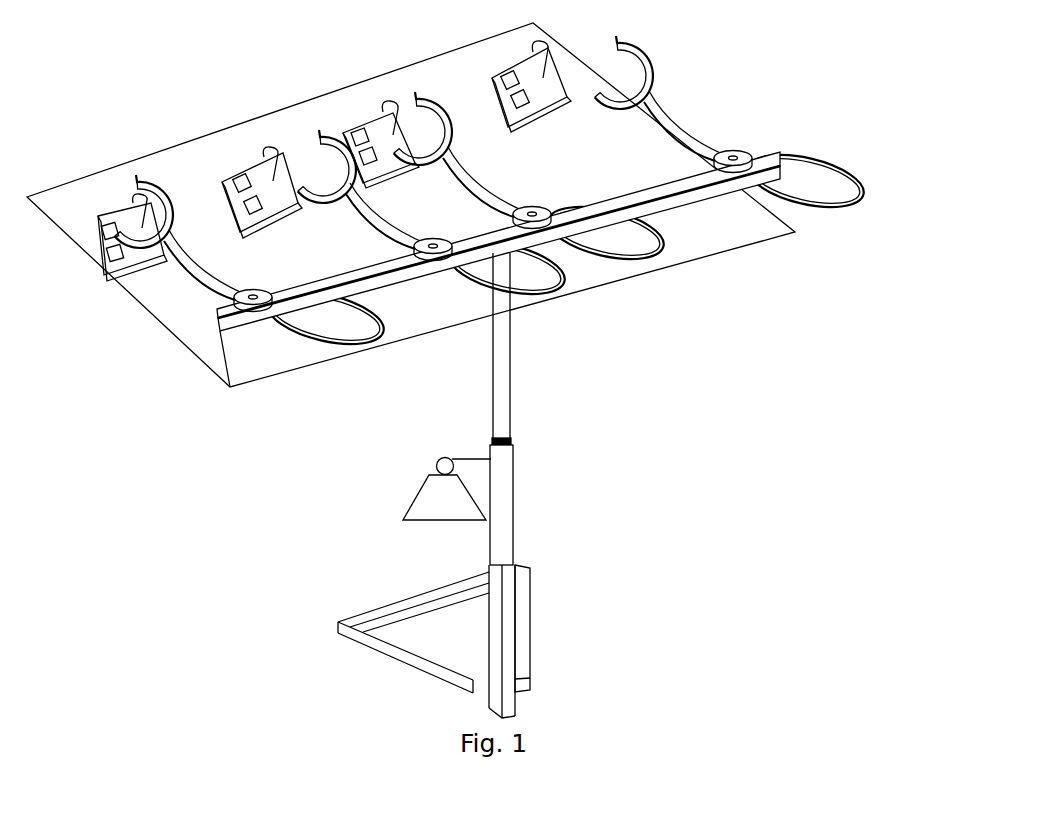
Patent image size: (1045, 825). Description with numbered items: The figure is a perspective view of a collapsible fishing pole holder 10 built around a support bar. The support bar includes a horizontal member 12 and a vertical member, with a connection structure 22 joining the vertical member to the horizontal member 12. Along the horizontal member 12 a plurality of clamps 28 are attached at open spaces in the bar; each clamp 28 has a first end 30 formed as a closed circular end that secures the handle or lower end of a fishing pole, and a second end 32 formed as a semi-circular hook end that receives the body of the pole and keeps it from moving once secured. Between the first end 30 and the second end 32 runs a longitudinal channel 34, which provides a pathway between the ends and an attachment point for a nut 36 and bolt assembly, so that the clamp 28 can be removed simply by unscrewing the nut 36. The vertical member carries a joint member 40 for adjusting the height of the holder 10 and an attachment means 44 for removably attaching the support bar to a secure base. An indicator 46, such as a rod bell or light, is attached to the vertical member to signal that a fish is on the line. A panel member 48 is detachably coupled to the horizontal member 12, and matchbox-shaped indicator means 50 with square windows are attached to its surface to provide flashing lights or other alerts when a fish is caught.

The fishing pole holder 10 is at (485, 381).
The horizontal member 12 is at (683, 210).
The connection structure 22 is at (515, 270).
The clamp 28 is at (175, 283).
The first end 30 is at (858, 180).
The second end 32 is at (640, 56).
The longitudinal channel 34 is at (693, 152).
The nut 36 is at (251, 286).
The joint member 40 is at (513, 440).
The attachment means 44 is at (532, 670).
The indicator 46 is at (417, 477).
The panel member 48 is at (246, 118).
The indicator means 50 is at (238, 166).